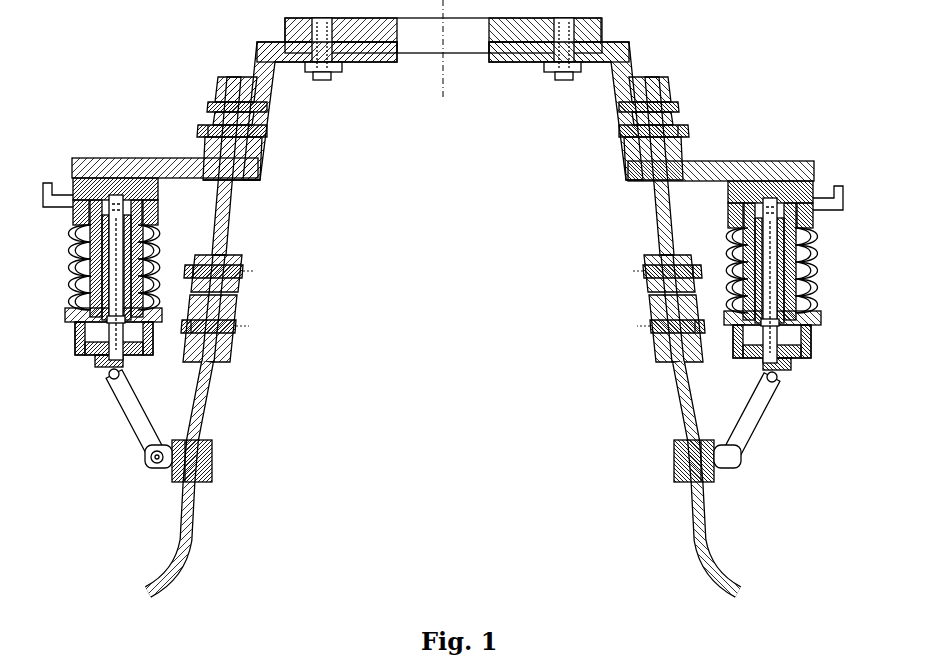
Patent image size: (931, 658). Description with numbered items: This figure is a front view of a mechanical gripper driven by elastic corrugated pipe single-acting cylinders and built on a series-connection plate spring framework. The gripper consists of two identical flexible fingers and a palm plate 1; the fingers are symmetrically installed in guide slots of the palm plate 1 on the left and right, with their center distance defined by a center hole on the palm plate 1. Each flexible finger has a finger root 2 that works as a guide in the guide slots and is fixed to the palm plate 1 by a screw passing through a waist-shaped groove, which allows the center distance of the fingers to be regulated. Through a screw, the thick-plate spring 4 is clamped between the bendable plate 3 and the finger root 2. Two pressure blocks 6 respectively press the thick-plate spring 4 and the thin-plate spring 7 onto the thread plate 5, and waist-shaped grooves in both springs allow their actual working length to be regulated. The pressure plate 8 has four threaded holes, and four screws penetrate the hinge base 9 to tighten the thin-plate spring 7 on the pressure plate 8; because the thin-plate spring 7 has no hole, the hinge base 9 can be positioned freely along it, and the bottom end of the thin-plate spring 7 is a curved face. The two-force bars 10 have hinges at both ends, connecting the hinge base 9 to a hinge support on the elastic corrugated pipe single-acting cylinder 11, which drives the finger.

The palm plate 1 is at (522, 62).
The finger root 2 is at (272, 88).
The bendable plate 3 is at (258, 181).
The thick-plate spring 4 is at (233, 228).
The thread plate 5 is at (233, 298).
The pressure blocks 6 is at (212, 357).
The thin-plate spring 7 is at (203, 415).
The pressure plate 8 is at (210, 473).
The hinge base 9 is at (165, 476).
The two-force bars 10 is at (127, 417).
The elastic corrugated pipe single-acting cylinder 11 is at (88, 358).